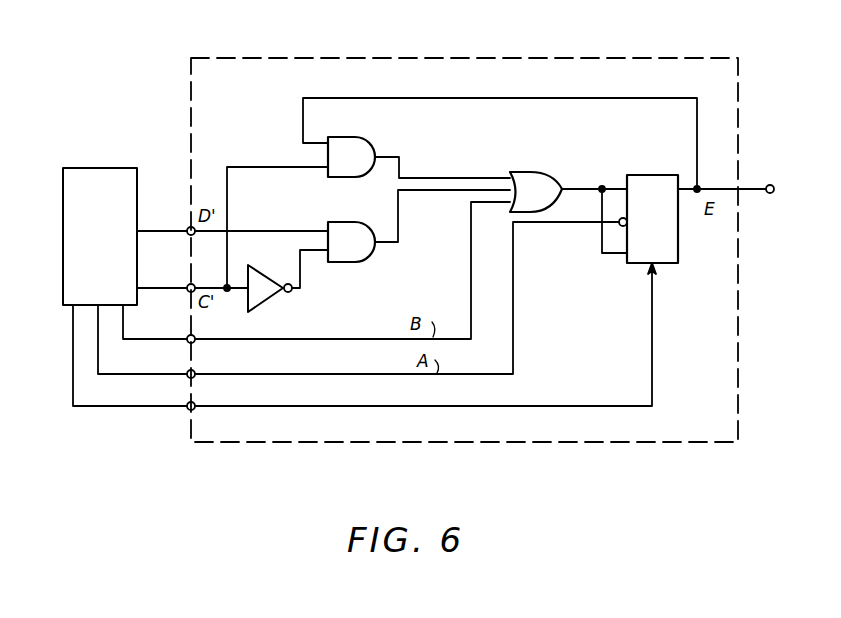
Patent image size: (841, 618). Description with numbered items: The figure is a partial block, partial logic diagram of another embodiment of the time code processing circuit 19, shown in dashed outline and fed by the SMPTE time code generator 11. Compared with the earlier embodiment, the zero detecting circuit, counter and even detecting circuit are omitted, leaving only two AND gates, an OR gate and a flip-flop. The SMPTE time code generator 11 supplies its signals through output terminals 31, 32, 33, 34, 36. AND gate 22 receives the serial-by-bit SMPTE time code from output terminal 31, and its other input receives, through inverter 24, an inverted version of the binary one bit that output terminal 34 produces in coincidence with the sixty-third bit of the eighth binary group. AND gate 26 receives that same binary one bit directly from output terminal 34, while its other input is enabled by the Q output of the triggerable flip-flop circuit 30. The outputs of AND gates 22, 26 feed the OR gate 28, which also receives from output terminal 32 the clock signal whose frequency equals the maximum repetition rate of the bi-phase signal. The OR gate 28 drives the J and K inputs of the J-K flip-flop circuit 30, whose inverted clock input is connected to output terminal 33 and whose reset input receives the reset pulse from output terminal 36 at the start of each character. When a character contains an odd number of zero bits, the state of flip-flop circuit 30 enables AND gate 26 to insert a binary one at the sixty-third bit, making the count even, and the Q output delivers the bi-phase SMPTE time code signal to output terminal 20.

The SMPTE time code generator 11 is at (102, 174).
The time code processing circuit 19 is at (252, 65).
The output terminal 20 is at (773, 185).
The AND gate 22 is at (362, 264).
The inverter 24 is at (264, 296).
The AND gate 26 is at (372, 141).
The OR gate 28 is at (549, 161).
The triggerable flip-flop circuit 30 is at (658, 172).
The output terminal 31 is at (188, 228).
The output terminal 32 is at (188, 336).
The output terminal 33 is at (188, 371).
The output terminal 34 is at (188, 285).
The output terminal 36 is at (188, 403).